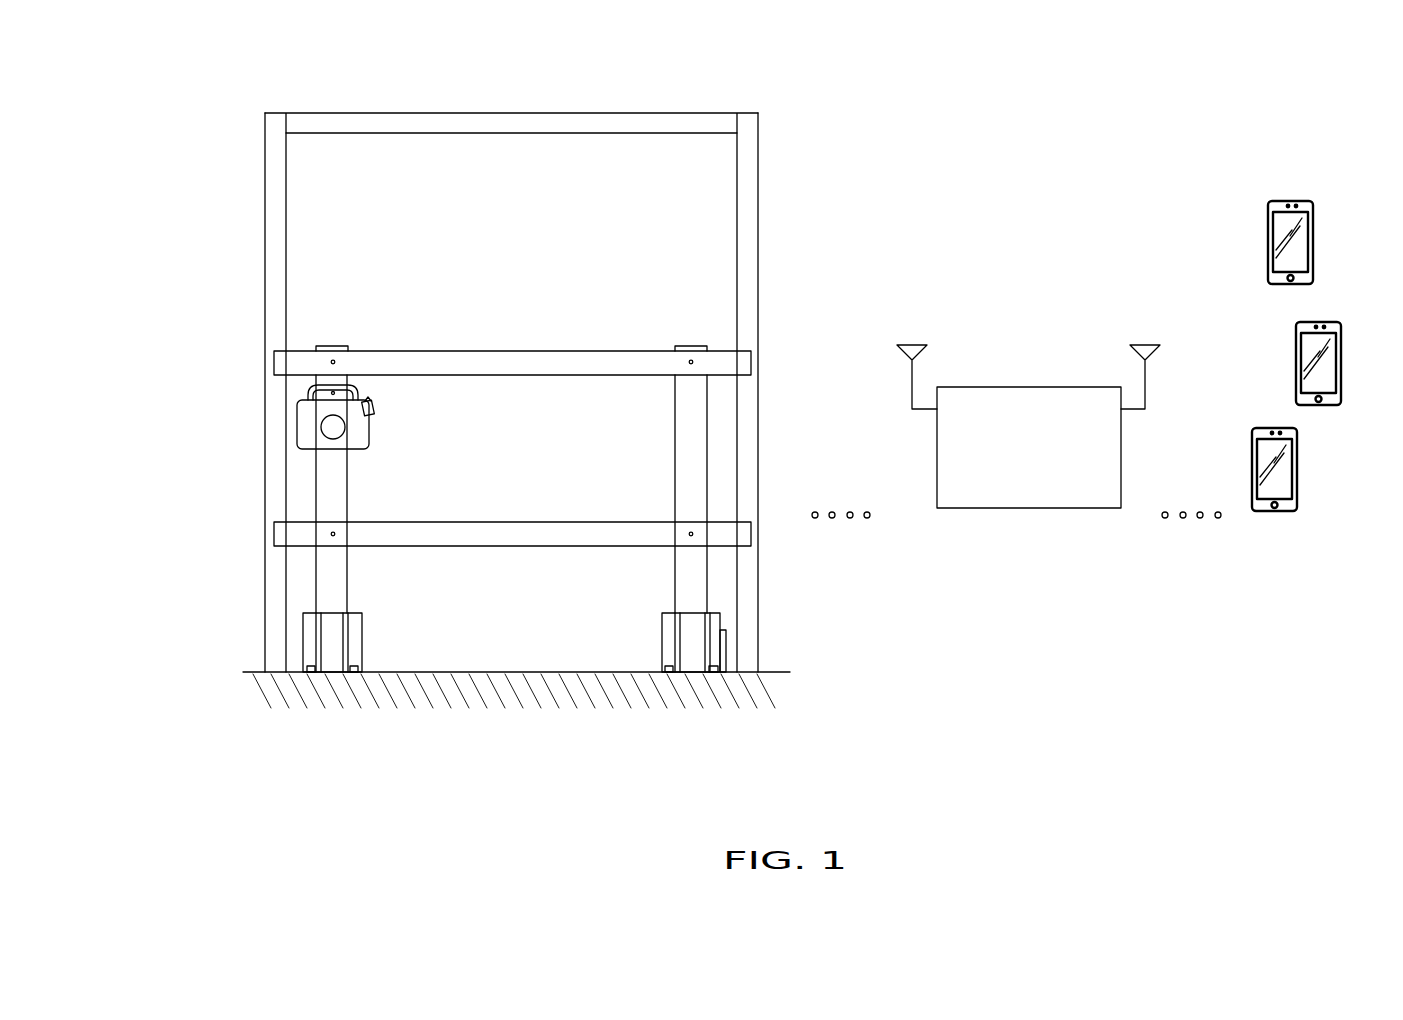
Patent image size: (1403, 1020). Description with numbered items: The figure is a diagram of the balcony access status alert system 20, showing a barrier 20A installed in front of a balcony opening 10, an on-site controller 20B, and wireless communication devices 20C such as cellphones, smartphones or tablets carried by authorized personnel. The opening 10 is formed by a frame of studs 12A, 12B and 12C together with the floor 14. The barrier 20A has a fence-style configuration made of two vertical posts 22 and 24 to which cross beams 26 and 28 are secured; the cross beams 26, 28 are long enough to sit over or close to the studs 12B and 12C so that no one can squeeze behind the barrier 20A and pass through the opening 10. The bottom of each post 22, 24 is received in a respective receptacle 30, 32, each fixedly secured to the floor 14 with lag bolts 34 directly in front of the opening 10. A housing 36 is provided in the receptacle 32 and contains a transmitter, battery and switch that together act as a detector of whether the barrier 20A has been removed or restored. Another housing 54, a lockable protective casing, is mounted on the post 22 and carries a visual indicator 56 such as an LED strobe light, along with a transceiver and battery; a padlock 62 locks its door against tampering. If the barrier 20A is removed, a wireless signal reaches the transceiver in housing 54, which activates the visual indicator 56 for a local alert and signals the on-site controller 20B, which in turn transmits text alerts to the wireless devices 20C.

The balcony opening 10 is at (518, 215).
The stud 12A is at (668, 123).
The stud 12B is at (275, 257).
The stud 12C is at (750, 142).
The floor 14 is at (647, 695).
The balcony access status alert system 20 is at (928, 253).
The barrier 20A is at (648, 318).
The on-site controller 20B is at (1039, 535).
The wireless communication device 20C is at (1357, 541).
The vertical post 22 is at (333, 489).
The vertical post 24 is at (675, 457).
The cross beam 26 is at (532, 363).
The cross beam 28 is at (480, 534).
The receptacle 30 is at (372, 633).
The receptacle 32 is at (649, 628).
The lag bolt 34 is at (310, 675).
The housing 36 is at (728, 645).
The housing 54 is at (334, 358).
The visual indicator 56 is at (315, 429).
The padlock 62 is at (375, 410).